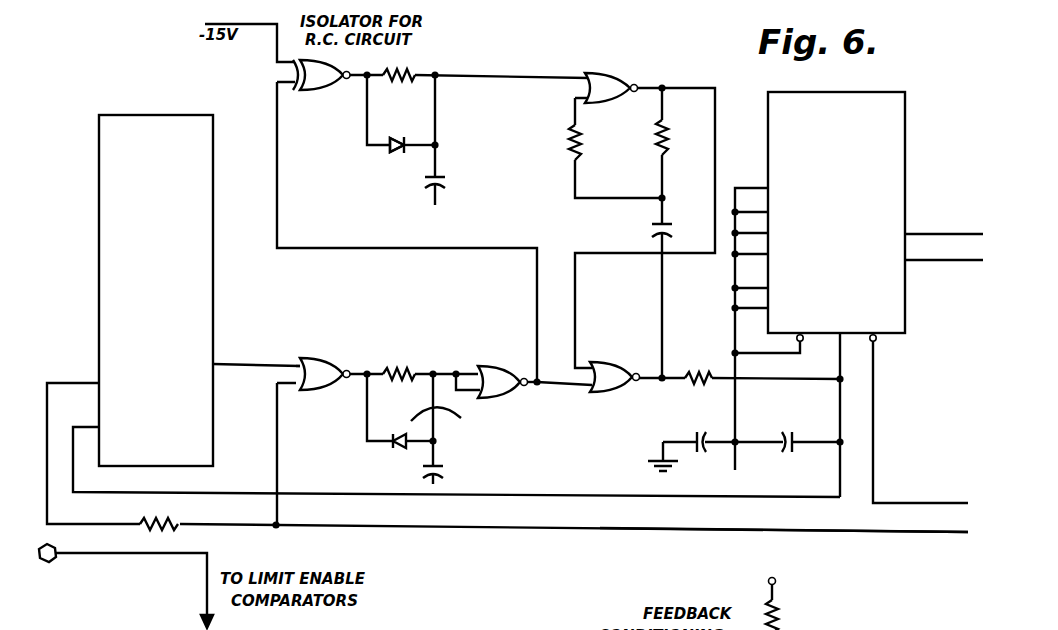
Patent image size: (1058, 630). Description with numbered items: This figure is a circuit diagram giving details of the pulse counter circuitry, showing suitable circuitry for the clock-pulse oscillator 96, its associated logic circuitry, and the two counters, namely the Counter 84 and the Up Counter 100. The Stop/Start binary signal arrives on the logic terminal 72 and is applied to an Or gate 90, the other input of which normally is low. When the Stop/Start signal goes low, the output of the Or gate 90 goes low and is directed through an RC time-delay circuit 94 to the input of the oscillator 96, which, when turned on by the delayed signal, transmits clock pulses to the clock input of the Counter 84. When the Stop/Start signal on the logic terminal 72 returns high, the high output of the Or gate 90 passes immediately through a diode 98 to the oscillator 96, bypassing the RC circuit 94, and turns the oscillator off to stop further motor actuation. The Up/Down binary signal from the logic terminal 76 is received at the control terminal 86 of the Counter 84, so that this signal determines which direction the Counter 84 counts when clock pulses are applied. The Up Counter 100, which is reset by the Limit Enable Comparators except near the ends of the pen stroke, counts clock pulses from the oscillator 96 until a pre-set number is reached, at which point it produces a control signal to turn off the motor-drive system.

The Up Counter 100 is at (94, 145).
The Counter 84 is at (924, 140).
The control terminal 86 is at (876, 341).
The Or gate 90 is at (519, 357).
The RC time-delay circuit 94 is at (432, 140).
The clock-pulse oscillator 96 is at (566, 56).
The diode 98 is at (394, 151).
The logic terminal 76 is at (920, 441).
The logic terminal 72 is at (784, 553).